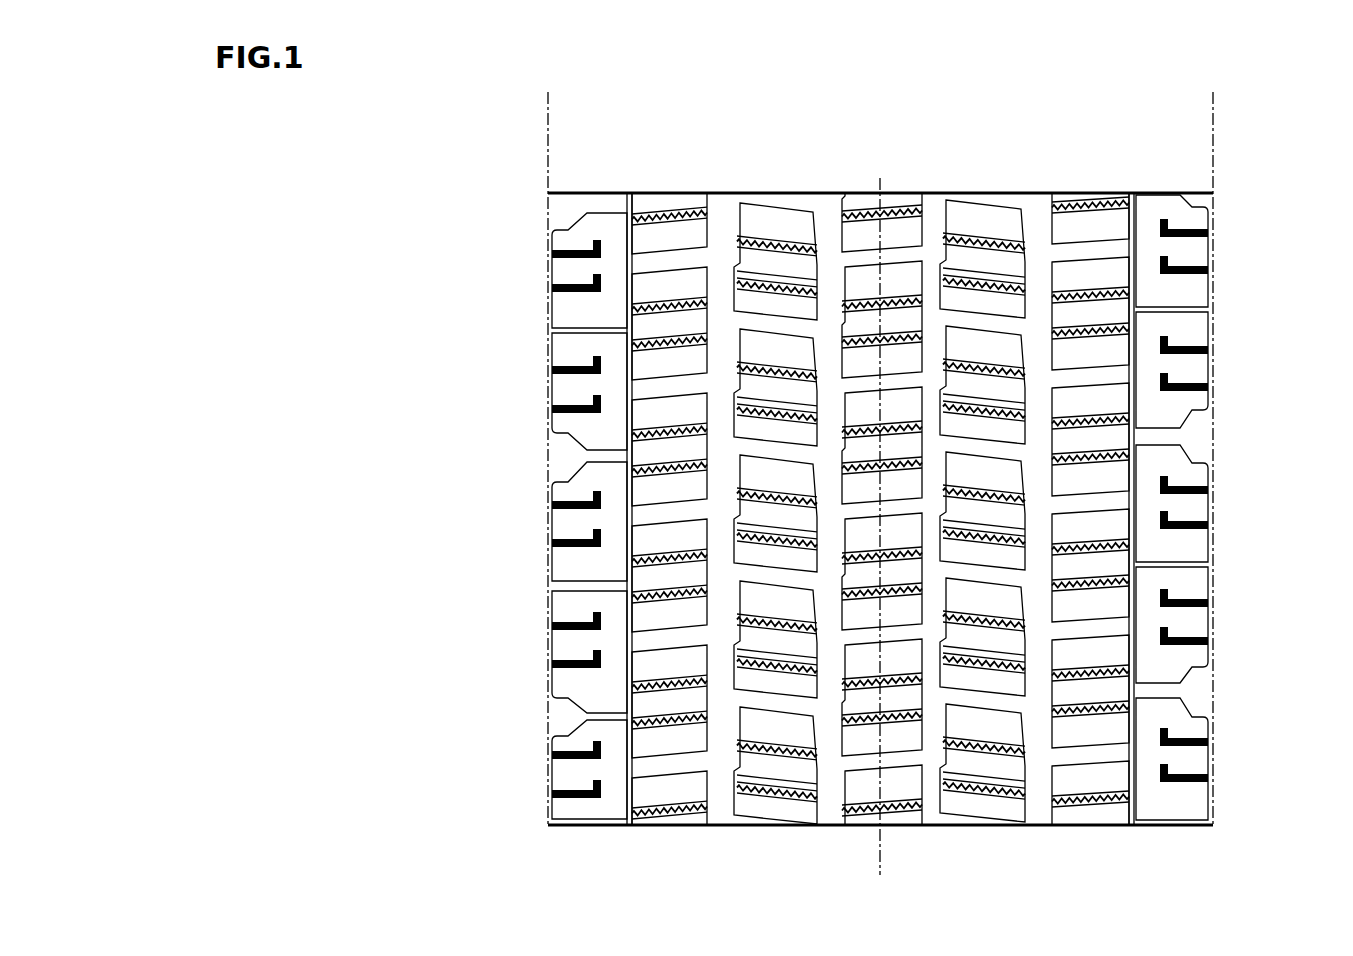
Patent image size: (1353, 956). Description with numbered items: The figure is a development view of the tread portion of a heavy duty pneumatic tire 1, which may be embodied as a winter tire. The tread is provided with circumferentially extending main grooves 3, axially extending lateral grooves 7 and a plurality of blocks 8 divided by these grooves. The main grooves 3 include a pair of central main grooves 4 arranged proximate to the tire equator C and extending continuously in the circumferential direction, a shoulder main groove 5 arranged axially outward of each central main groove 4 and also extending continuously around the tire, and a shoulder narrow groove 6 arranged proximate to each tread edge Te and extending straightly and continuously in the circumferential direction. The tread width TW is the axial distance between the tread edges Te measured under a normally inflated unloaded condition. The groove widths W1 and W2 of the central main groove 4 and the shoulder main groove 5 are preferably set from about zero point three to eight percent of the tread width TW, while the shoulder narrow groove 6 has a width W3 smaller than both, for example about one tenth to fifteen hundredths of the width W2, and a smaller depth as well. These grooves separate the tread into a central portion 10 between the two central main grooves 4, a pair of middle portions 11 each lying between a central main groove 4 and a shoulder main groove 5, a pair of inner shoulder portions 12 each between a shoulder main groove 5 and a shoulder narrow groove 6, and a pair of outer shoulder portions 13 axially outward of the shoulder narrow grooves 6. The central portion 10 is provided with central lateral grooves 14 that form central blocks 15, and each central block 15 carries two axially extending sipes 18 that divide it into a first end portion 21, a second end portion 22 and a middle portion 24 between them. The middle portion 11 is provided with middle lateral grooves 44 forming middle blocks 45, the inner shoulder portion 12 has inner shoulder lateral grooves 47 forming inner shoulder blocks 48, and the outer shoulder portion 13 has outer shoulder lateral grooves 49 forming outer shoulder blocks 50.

The heavy duty pneumatic tire 1 is at (1015, 186).
The main grooves 3 is at (848, 145).
The central main groove 4 is at (825, 242).
The shoulder main groove 5 is at (722, 242).
The shoulder narrow groove 6 is at (624, 228).
The lateral grooves 7 is at (470, 318).
The blocks 8 is at (1290, 270).
The central portion 10 is at (897, 232).
The middle portion 11 is at (772, 240).
The inner shoulder portion 12 is at (667, 245).
The outer shoulder portion 13 is at (587, 233).
The central lateral grooves 14 is at (871, 261).
The central block 15 is at (903, 321).
The sipes 18 is at (764, 505).
The first end portion 21 is at (790, 740).
The second end portion 22 is at (760, 800).
The middle portion 24 is at (778, 773).
The middle lateral grooves 44 is at (774, 322).
The middle blocks 45 is at (992, 380).
The inner shoulder lateral grooves 47 is at (658, 392).
The inner shoulder blocks 48 is at (1099, 444).
The outer shoulder lateral grooves 49 is at (598, 461).
The outer shoulder blocks 50 is at (1155, 507).
The tire equator C is at (880, 514).
The tread edge Te is at (546, 264).
The tread width TW is at (1211, 92).
The groove width of the central main groove W1 is at (898, 793).
The groove width of the shoulder main groove W2 is at (992, 797).
The width of the shoulder narrow groove W3 is at (662, 802).